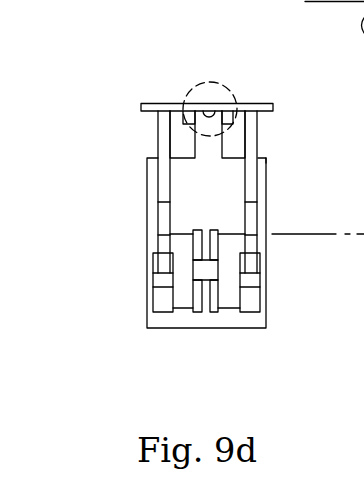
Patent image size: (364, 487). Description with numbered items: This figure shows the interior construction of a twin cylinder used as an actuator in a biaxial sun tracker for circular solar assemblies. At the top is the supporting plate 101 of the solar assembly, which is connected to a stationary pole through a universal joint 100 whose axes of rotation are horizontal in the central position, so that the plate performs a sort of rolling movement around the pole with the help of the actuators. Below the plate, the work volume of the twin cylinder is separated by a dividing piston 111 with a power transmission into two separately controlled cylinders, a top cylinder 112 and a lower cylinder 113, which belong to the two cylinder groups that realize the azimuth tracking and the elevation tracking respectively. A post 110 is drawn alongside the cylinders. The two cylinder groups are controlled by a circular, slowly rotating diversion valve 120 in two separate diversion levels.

The universal joint 100 is at (193, 88).
The supporting plate 101 is at (270, 105).
The guide post 110 is at (165, 134).
The top cylinder 112 is at (163, 218).
The dividing piston 111 is at (163, 262).
The lower cylinder 113 is at (162, 302).
The diversion valve 120 is at (198, 313).